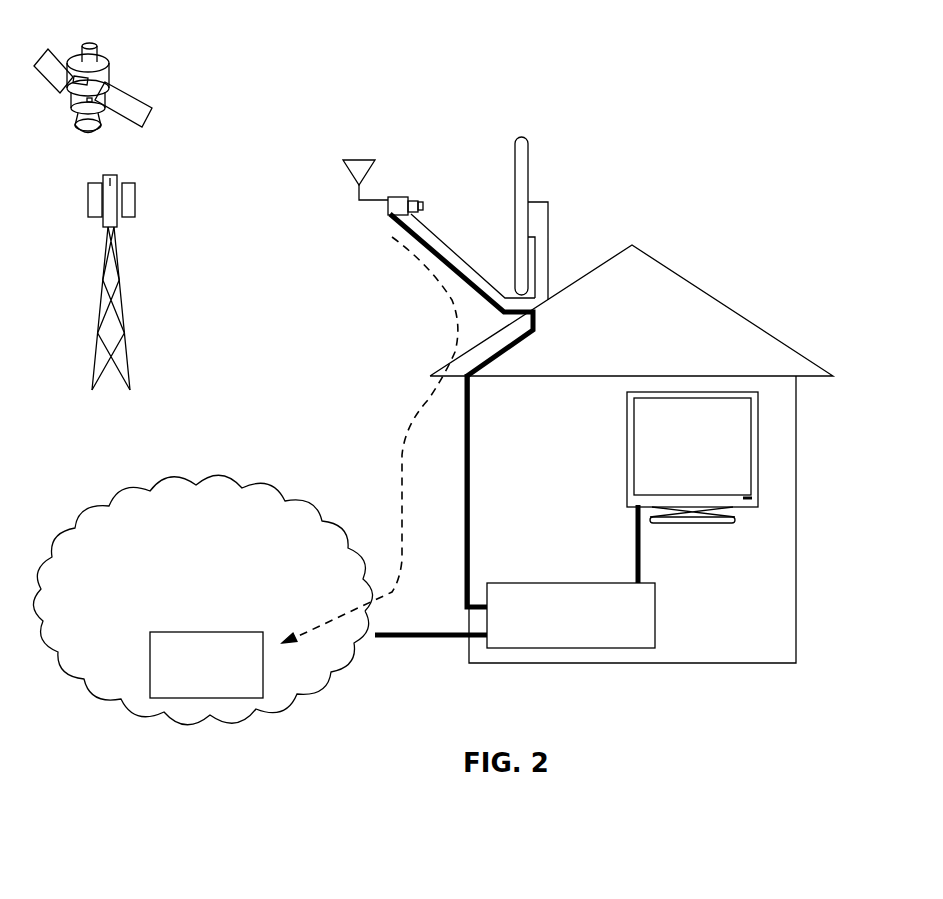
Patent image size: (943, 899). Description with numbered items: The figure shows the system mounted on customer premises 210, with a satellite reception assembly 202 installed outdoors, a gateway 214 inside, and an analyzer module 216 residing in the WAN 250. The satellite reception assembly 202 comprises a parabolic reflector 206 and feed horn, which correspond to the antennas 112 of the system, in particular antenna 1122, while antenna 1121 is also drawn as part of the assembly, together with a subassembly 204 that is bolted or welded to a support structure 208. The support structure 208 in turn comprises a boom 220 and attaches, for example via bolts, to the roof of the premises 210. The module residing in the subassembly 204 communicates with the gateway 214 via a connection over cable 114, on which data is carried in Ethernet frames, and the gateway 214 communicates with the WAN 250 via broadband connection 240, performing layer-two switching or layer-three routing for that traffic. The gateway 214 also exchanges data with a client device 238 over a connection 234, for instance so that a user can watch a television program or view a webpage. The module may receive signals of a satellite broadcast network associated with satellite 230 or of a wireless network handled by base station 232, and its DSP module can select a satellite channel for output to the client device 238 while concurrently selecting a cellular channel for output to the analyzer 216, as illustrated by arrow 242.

The satellite 230 is at (90, 44).
The base station 232 is at (88, 207).
The WAN 250 is at (187, 622).
The analyzer module 216 is at (190, 688).
The satellite reception assembly 202 is at (431, 155).
The antenna 112 is at (400, 171).
The antenna 1121 is at (359, 160).
The antenna 1122 is at (424, 205).
The subassembly 204 is at (388, 208).
The boom 220 is at (457, 250).
The parabolic reflector 206 is at (528, 170).
The support structure 208 is at (549, 233).
The premises 210 is at (736, 310).
The arrow 242 is at (410, 414).
The cable 114 is at (463, 500).
The client device 238 is at (627, 449).
The connection 234 is at (637, 544).
The broadband connection 240 is at (417, 632).
The gateway 214 is at (554, 638).